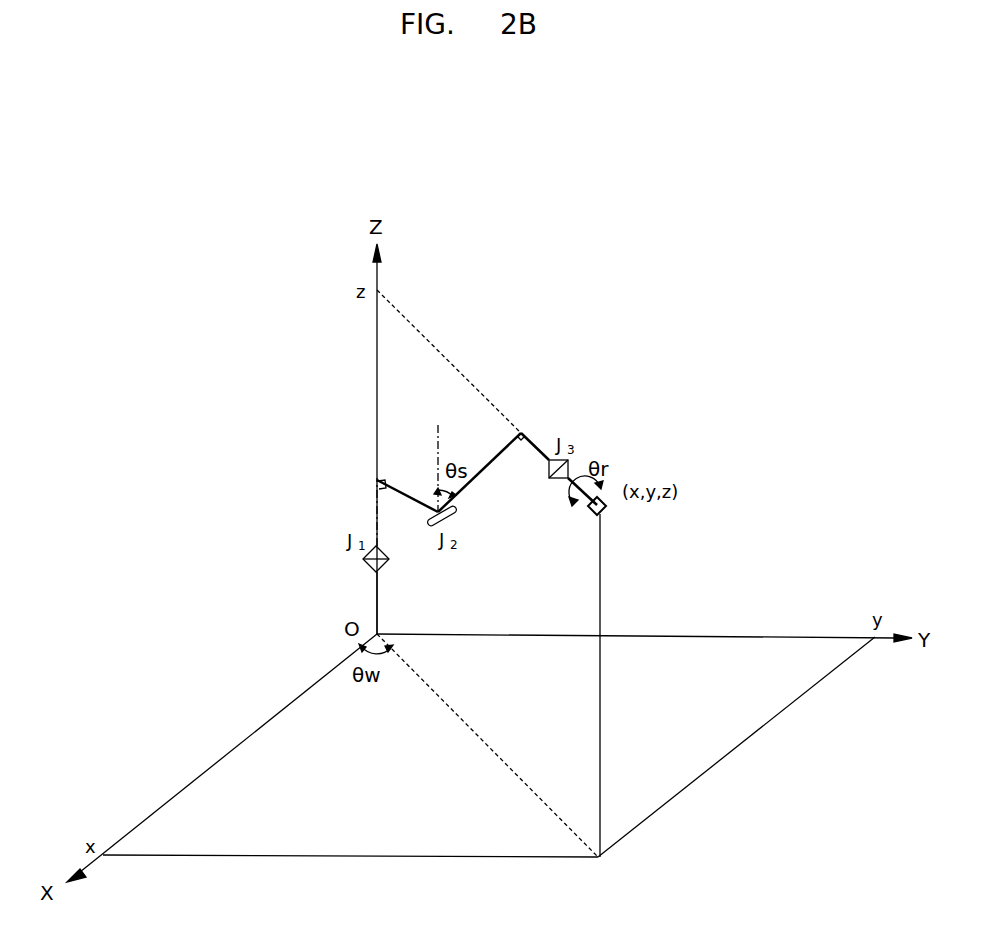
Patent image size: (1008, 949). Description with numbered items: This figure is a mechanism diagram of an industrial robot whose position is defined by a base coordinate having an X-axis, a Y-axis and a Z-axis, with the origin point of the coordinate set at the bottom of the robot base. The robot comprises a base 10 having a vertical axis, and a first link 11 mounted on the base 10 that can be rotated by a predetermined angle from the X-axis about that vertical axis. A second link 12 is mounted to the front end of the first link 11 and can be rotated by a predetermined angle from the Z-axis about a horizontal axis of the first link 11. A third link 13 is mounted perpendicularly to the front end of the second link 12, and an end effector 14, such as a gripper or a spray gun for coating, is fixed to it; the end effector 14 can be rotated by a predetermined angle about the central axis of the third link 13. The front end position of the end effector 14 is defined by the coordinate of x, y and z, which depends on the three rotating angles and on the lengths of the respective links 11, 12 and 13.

The base 10 is at (376, 594).
The first link 11 is at (388, 490).
The second link 12 is at (484, 470).
The third link 13 is at (535, 436).
The end effector 14 is at (607, 506).